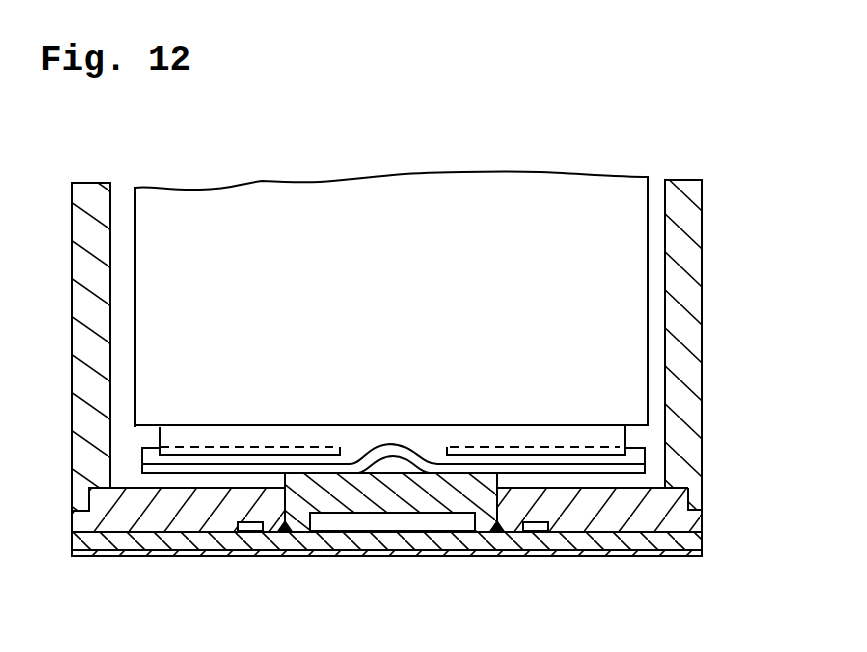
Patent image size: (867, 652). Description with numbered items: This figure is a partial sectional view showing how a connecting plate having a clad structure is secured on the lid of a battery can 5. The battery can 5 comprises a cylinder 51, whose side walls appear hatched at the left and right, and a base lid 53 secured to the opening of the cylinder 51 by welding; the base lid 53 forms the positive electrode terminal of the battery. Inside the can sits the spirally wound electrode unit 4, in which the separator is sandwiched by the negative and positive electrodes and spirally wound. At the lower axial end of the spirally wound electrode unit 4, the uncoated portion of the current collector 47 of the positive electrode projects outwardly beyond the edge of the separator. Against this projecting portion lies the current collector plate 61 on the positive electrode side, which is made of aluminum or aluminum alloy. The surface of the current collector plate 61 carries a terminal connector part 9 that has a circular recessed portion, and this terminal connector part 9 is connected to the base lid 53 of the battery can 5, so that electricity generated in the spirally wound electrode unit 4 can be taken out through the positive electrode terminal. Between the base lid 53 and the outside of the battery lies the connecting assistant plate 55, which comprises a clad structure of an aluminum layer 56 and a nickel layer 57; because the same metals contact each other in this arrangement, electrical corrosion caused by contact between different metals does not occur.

The spirally wound electrode unit 4 is at (416, 305).
The battery can 5 is at (688, 253).
The cylinder 51 is at (688, 387).
The current collector 47 is at (613, 438).
The current collector plate 61 is at (633, 479).
The base lid 53 is at (675, 518).
The terminal connector part 9 is at (397, 478).
The aluminum layer 56 is at (690, 538).
The nickel layer 57 is at (663, 560).
The connecting assistant plate 55 is at (781, 553).